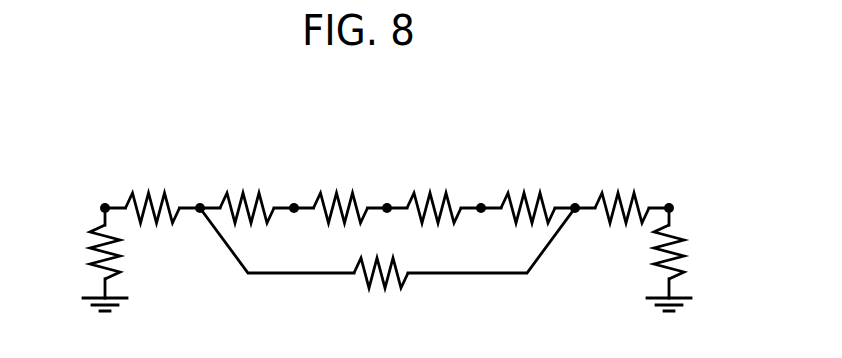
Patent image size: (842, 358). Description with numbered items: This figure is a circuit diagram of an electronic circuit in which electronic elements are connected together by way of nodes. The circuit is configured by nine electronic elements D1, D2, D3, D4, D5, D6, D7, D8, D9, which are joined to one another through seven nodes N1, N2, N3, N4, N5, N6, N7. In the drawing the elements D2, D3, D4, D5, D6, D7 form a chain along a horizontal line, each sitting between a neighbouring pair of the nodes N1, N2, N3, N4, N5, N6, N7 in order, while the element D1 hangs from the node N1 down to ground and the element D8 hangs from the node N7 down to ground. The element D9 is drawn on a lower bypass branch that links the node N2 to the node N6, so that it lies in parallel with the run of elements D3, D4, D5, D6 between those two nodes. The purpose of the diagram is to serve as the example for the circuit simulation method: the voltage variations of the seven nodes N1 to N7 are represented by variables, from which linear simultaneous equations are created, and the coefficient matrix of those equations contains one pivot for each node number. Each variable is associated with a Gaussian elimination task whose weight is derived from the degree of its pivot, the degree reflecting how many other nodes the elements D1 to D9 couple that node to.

The node N1 is at (105, 205).
The node N2 is at (200, 205).
The node N3 is at (294, 205).
The node N4 is at (387, 205).
The node N5 is at (481, 205).
The node N6 is at (575, 205).
The node N7 is at (669, 205).
The electronic element D1 is at (90, 262).
The electronic element D2 is at (146, 192).
The electronic element D3 is at (242, 192).
The electronic element D4 is at (334, 192).
The electronic element D5 is at (429, 192).
The electronic element D6 is at (522, 192).
The electronic element D7 is at (616, 192).
The electronic element D8 is at (684, 250).
The electronic element D9 is at (383, 288).